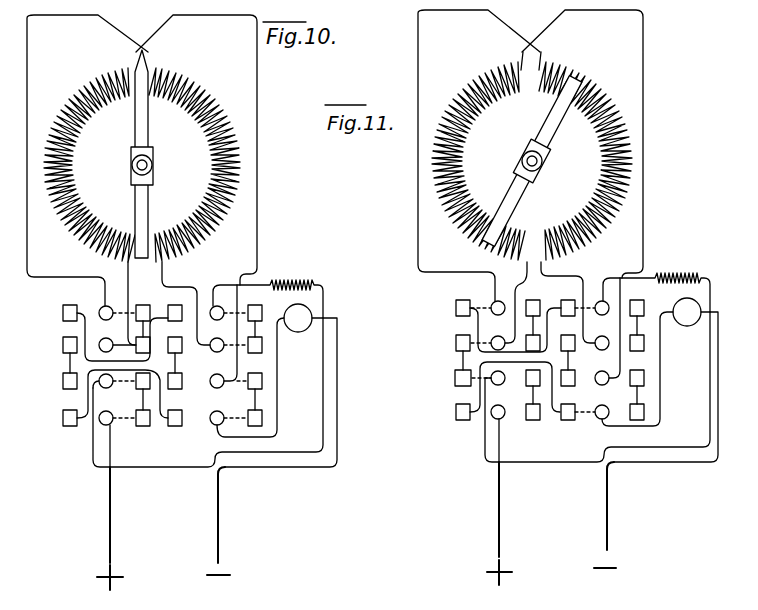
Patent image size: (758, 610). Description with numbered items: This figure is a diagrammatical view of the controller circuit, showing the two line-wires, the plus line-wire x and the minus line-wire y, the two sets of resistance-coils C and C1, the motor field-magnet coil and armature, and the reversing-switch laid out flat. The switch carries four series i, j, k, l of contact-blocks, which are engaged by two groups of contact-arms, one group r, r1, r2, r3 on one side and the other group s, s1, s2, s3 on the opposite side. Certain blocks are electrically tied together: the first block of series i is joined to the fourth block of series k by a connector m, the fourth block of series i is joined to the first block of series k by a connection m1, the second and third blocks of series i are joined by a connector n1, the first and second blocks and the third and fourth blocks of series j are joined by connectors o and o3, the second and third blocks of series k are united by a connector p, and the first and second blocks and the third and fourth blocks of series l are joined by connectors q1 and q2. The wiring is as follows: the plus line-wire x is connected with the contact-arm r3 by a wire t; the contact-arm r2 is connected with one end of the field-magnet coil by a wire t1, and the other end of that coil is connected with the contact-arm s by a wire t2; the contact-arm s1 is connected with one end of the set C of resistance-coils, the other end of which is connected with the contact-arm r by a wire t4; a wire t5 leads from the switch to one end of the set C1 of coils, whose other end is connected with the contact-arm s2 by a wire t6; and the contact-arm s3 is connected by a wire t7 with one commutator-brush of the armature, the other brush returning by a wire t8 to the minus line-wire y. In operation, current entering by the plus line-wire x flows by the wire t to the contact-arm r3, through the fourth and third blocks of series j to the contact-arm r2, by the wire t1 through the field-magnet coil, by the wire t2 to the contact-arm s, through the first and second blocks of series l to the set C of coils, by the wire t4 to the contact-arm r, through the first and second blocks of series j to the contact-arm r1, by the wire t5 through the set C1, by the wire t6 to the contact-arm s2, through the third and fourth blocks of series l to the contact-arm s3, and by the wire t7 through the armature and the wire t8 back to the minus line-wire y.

In FIG. 10, the set of resistance-coils C is at (194, 206).
In FIG. 11, the set of resistance-coils C is at (585, 202).
In FIG. 10, the set of resistance-coils C1 is at (89, 165).
In FIG. 11, the set of resistance-coils C1 is at (478, 161).
In FIG. 10, the wire t is at (114, 446).
In FIG. 11, the wire t is at (503, 440).
In FIG. 10, the wire t1 is at (201, 392).
In FIG. 11, the wire t1 is at (591, 387).
In FIG. 10, the wire t2 is at (268, 293).
In FIG. 11, the wire t2 is at (656, 292).
In FIG. 10, the wire t4 is at (78, 160).
In FIG. 11, the wire t4 is at (469, 155).
In FIG. 10, the wire t5 is at (140, 197).
In FIG. 11, the wire t5 is at (532, 197).
In FIG. 10, the wire t6 is at (205, 150).
In FIG. 11, the wire t6 is at (592, 144).
In FIG. 10, the wire t7 is at (264, 370).
In FIG. 11, the wire t7 is at (651, 362).
In FIG. 10, the wire t8 is at (287, 392).
In FIG. 11, the wire t8 is at (673, 387).
In FIG. 10, the series of contact-blocks i is at (70, 357).
In FIG. 11, the series of contact-blocks i is at (463, 352).
In FIG. 10, the series of contact-blocks j is at (143, 357).
In FIG. 11, the series of contact-blocks j is at (533, 352).
In FIG. 10, the series of contact-blocks k is at (175, 357).
In FIG. 11, the series of contact-blocks k is at (568, 352).
In FIG. 10, the series of contact-blocks l is at (255, 357).
In FIG. 11, the series of contact-blocks l is at (637, 351).
In FIG. 10, the connector m is at (124, 394).
In FIG. 11, the connector m is at (517, 387).
In FIG. 10, the connection m1 is at (125, 337).
In FIG. 11, the connection m1 is at (518, 330).
In FIG. 10, the connector n1 is at (62, 363).
In FIG. 11, the connector n1 is at (455, 361).
In FIG. 10, the connector o is at (147, 329).
In FIG. 11, the connector o is at (537, 325).
In FIG. 10, the connector o3 is at (137, 399).
In FIG. 10, the connector p is at (181, 363).
In FIG. 11, the connector p is at (574, 360).
In FIG. 10, the connector q1 is at (261, 329).
In FIG. 11, the connector q1 is at (643, 325).
In FIG. 10, the connector q2 is at (262, 399).
In FIG. 11, the connector q2 is at (644, 395).
In FIG. 10, the contact-arm r is at (117, 308).
In FIG. 11, the contact-arm r is at (490, 303).
In FIG. 10, the contact-arm r1 is at (117, 340).
In FIG. 11, the contact-arm r1 is at (491, 338).
In FIG. 10, the contact-arm r2 is at (114, 376).
In FIG. 11, the contact-arm r2 is at (492, 373).
In FIG. 10, the contact-arm r3 is at (117, 413).
In FIG. 11, the contact-arm r3 is at (502, 407).
In FIG. 10, the contact-arm s is at (229, 306).
In FIG. 11, the contact-arm s is at (593, 303).
In FIG. 10, the contact-arm s1 is at (229, 339).
In FIG. 11, the contact-arm s1 is at (605, 338).
In FIG. 10, the contact-arm s2 is at (229, 336).
In FIG. 11, the contact-arm s2 is at (607, 331).
In FIG. 10, the contact-arm s3 is at (229, 412).
In FIG. 11, the contact-arm s3 is at (596, 407).
In FIG. 10, the plus line-wire x is at (110, 528).
In FIG. 11, the plus line-wire x is at (499, 523).
In FIG. 10, the minus line-wire y is at (216, 521).
In FIG. 11, the minus line-wire y is at (603, 515).